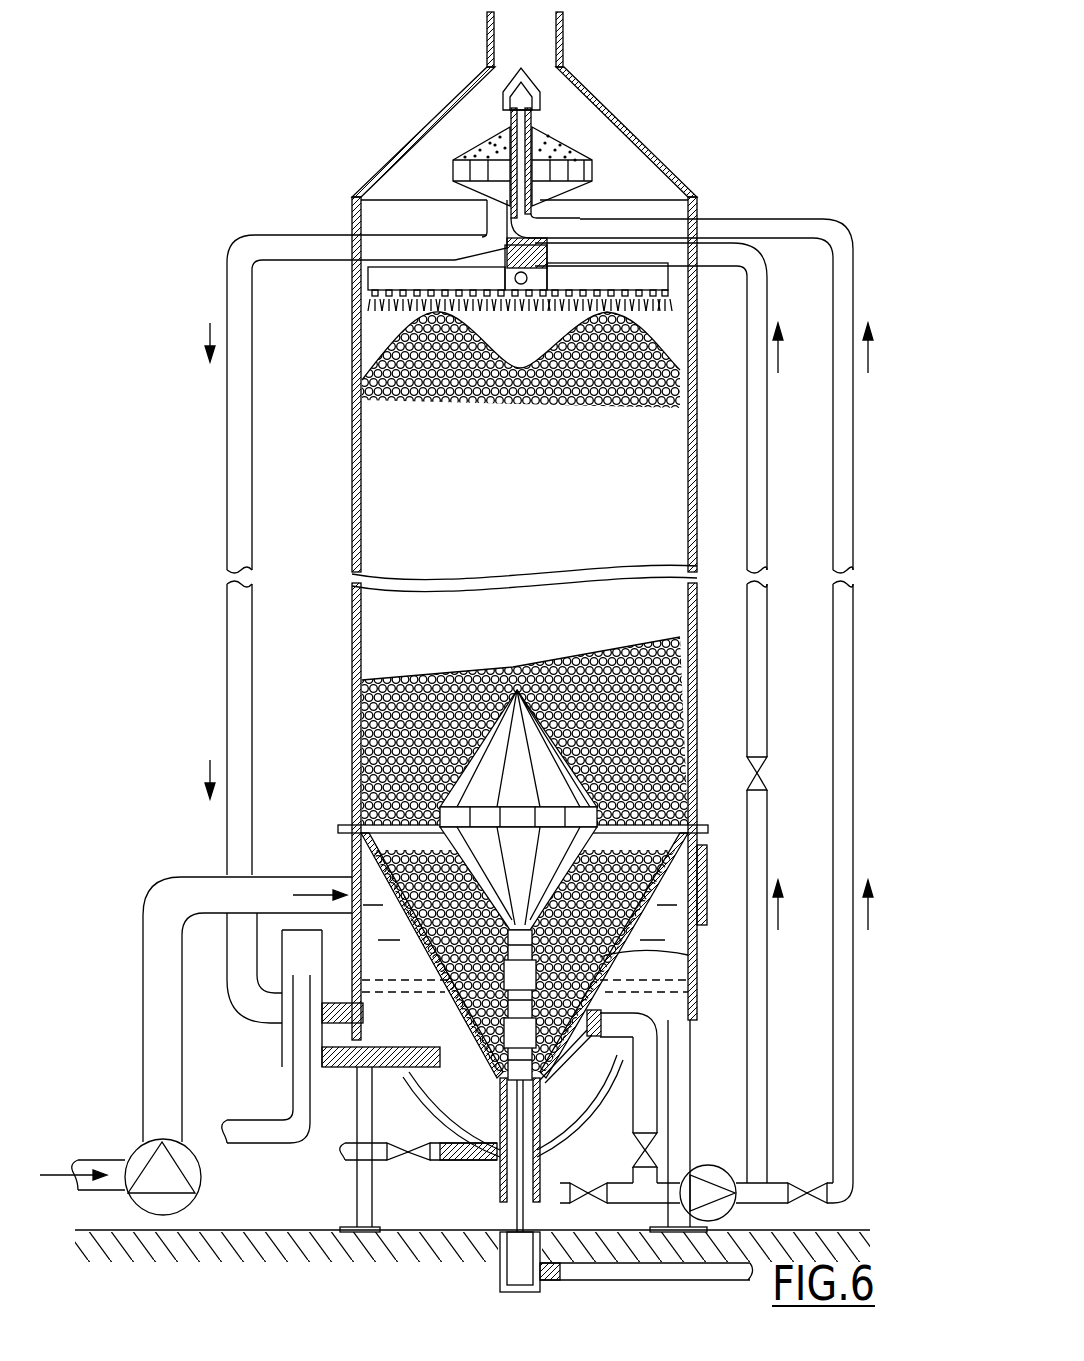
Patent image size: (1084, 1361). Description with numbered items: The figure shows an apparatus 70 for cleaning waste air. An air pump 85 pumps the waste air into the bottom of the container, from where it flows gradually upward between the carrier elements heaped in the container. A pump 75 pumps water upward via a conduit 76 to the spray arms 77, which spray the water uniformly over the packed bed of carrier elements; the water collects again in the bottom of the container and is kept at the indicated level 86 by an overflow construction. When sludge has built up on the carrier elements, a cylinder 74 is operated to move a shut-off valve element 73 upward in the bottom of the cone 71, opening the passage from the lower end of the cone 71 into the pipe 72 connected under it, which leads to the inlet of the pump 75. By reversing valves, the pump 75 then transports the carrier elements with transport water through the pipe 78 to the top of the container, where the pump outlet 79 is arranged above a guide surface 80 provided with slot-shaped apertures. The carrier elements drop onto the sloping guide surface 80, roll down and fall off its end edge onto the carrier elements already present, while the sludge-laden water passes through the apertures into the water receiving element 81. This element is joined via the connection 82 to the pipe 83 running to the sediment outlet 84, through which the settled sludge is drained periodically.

The apparatus 70 is at (752, 162).
The cone 71 is at (672, 957).
The pipe 72 is at (540, 1100).
The shut-off valve element 73 is at (490, 1070).
The cylinder 74 is at (497, 1262).
The pump 75 is at (735, 1142).
The conduit 76 is at (678, 278).
The spray arms 77 is at (578, 290).
The pipe 78 is at (836, 490).
The pump outlet 79 is at (547, 103).
The guide surface 80 is at (572, 152).
The water receiving element 81 is at (582, 200).
The connection 82 is at (485, 238).
The pipe 83 is at (236, 462).
The sediment outlet 84 is at (363, 1153).
The air pump 85 is at (128, 1138).
The level 86 is at (672, 997).